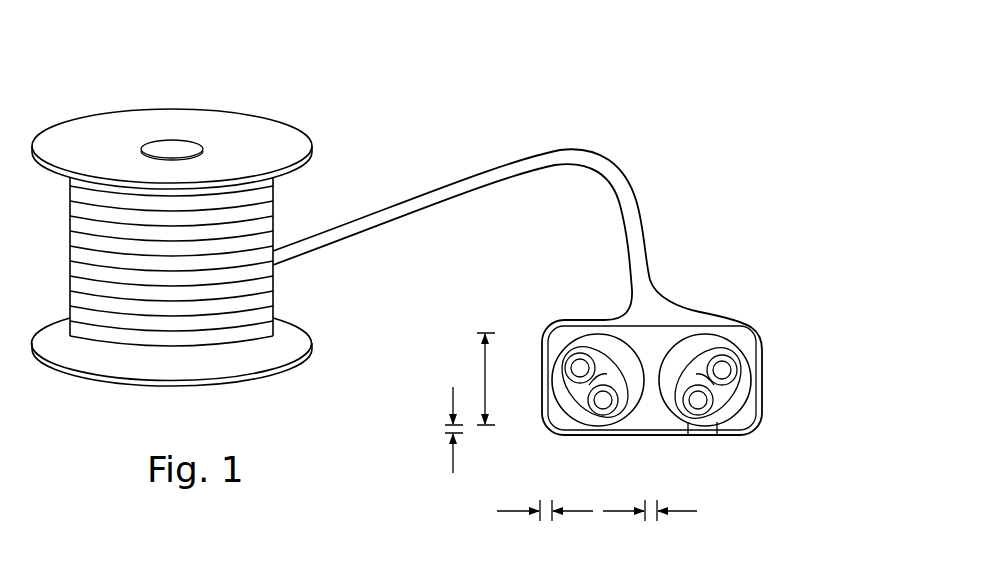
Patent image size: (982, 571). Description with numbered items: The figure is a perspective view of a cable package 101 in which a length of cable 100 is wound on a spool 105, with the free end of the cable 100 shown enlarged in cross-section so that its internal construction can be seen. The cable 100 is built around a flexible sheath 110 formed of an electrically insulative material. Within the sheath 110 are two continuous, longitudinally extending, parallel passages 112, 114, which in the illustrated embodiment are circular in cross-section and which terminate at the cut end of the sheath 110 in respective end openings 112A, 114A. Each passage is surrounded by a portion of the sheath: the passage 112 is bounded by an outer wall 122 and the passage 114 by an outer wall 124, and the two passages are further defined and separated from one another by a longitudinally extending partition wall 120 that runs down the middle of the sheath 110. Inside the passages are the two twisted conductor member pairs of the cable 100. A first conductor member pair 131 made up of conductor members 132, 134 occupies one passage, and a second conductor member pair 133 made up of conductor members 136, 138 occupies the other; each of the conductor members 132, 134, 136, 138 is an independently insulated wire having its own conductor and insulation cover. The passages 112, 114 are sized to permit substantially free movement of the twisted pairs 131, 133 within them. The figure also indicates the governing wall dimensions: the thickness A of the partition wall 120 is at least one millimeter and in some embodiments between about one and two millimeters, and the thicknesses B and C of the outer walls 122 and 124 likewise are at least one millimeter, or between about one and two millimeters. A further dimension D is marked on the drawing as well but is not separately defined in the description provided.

The package 101 is at (484, 80).
The spool 105 is at (251, 108).
The cable 100 is at (575, 147).
The flexible sheath 110 is at (673, 316).
The partition wall 120 is at (652, 355).
The outer wall 122 is at (547, 377).
The outer wall 124 is at (597, 338).
The first conductor member pair 131 is at (580, 338).
The conductor member 132 is at (570, 350).
The second conductor member pair 133 is at (726, 408).
The conductor member 134 is at (632, 375).
The conductor member 136 is at (715, 348).
The passage 112 is at (561, 403).
The end opening 112A is at (660, 418).
The passage 114 is at (733, 396).
The end opening 114A is at (717, 425).
The conductor member 138 is at (693, 436).
The thickness of the partition wall A is at (690, 512).
The thickness of the outer wall B is at (510, 511).
The thickness of the outer wall C is at (453, 463).
The distance D is at (482, 358).